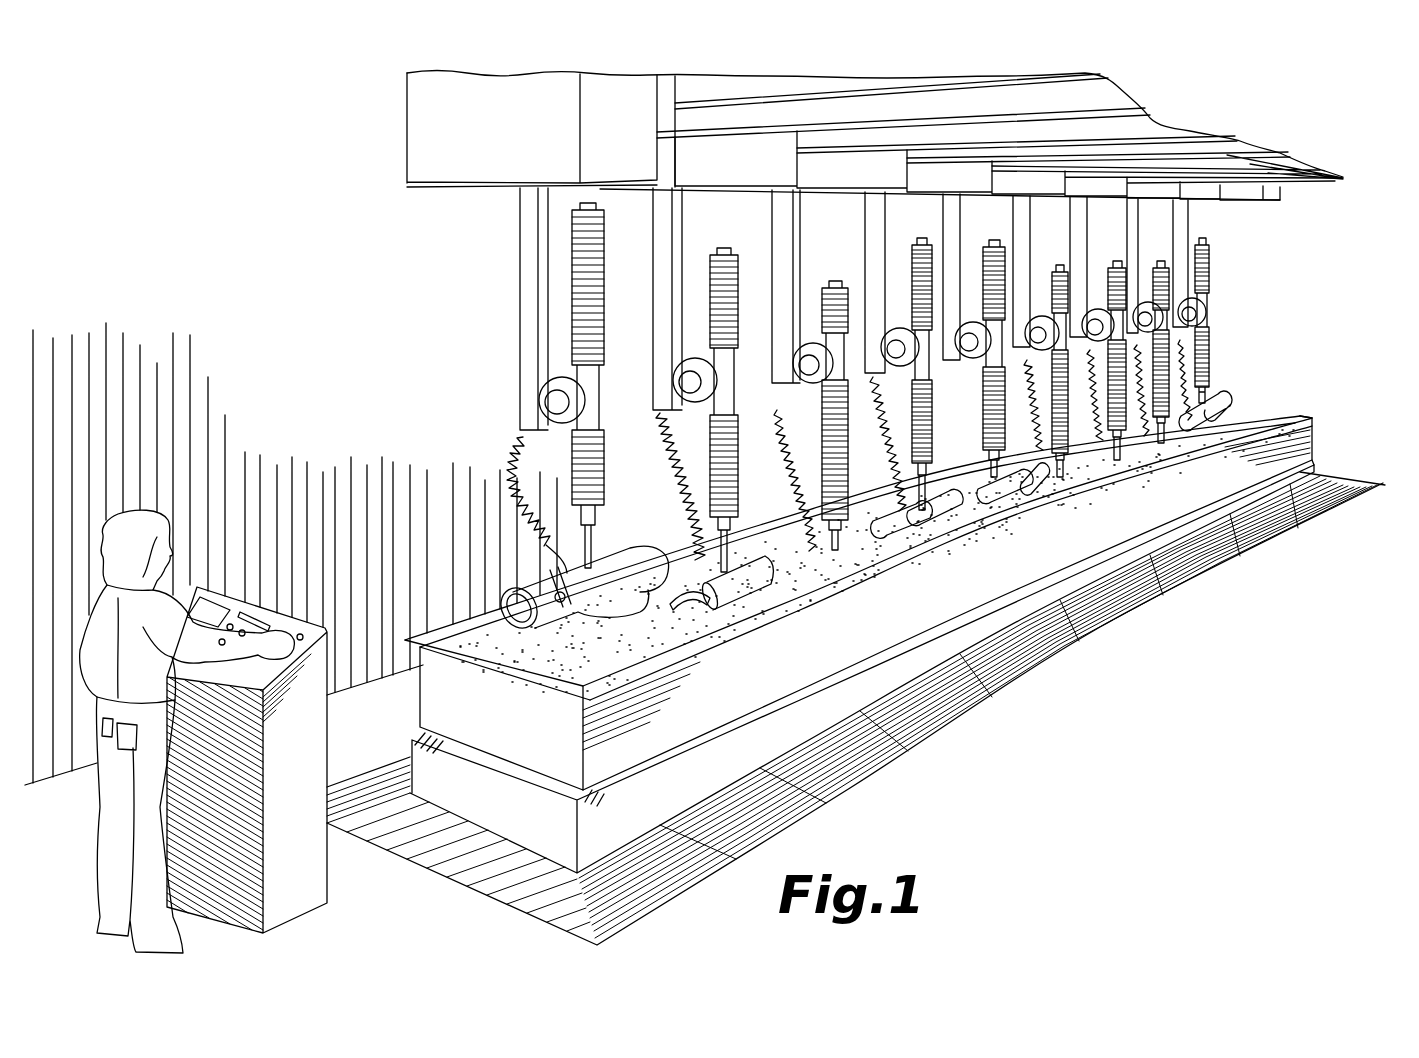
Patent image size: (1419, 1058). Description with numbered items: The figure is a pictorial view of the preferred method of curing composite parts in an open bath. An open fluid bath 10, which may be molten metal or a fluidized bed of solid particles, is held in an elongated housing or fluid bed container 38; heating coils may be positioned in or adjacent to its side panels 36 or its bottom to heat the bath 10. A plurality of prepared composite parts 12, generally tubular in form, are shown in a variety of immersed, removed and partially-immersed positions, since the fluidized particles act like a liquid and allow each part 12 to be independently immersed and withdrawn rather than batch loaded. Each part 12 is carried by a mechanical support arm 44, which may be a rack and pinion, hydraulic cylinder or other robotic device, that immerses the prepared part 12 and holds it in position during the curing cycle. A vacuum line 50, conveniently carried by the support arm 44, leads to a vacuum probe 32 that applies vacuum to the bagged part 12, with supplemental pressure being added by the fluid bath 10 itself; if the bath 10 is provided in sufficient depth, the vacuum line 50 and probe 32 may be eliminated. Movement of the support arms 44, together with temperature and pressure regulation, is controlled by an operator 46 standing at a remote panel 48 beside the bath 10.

The open fluid bath 10 is at (867, 563).
The composite parts 12 is at (523, 593).
The vacuum probe 32 is at (563, 567).
The side panels 36 is at (480, 737).
The fluid bed container 38 is at (1300, 417).
The mechanical arm 44 is at (508, 393).
The operator 46 is at (107, 823).
The remote panel 48 is at (287, 908).
The vacuum line 50 is at (515, 492).